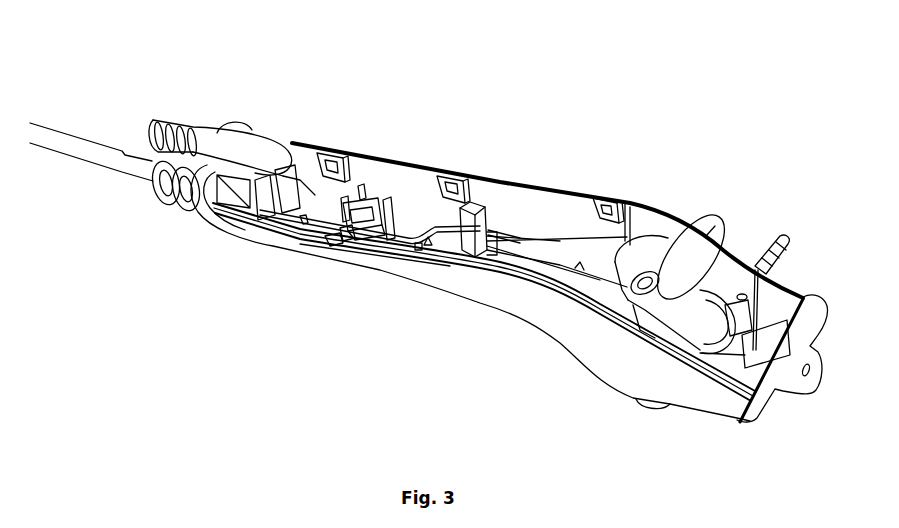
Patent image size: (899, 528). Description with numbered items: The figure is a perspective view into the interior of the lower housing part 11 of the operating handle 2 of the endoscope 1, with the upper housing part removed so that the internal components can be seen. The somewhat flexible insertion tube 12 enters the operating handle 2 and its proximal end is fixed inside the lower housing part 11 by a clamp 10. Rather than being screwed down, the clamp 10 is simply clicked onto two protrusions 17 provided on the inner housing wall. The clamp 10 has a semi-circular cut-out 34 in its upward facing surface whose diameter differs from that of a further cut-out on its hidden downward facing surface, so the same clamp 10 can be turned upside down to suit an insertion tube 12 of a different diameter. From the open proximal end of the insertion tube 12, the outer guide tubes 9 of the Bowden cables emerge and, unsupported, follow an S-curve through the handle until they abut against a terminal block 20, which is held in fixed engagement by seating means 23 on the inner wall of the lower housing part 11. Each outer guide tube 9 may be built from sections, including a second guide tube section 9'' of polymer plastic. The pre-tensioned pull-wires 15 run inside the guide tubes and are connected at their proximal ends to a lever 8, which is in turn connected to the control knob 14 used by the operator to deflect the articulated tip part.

The endoscope 1 is at (120, 122).
The operating handle 2 is at (448, 155).
The lever 8 is at (653, 247).
The outer guide tube 9 is at (390, 217).
The second guide tube section 9'' is at (431, 206).
The clamp 10 is at (330, 243).
The lower housing part 11 is at (385, 265).
The insertion tube 12 is at (105, 163).
The control knob 14 is at (703, 233).
The pull-wires 15 is at (565, 210).
The protrusions 17 is at (370, 183).
The terminal block 20 is at (483, 200).
The seating means 23 is at (505, 215).
The semi-circular cut-out 34 is at (387, 183).